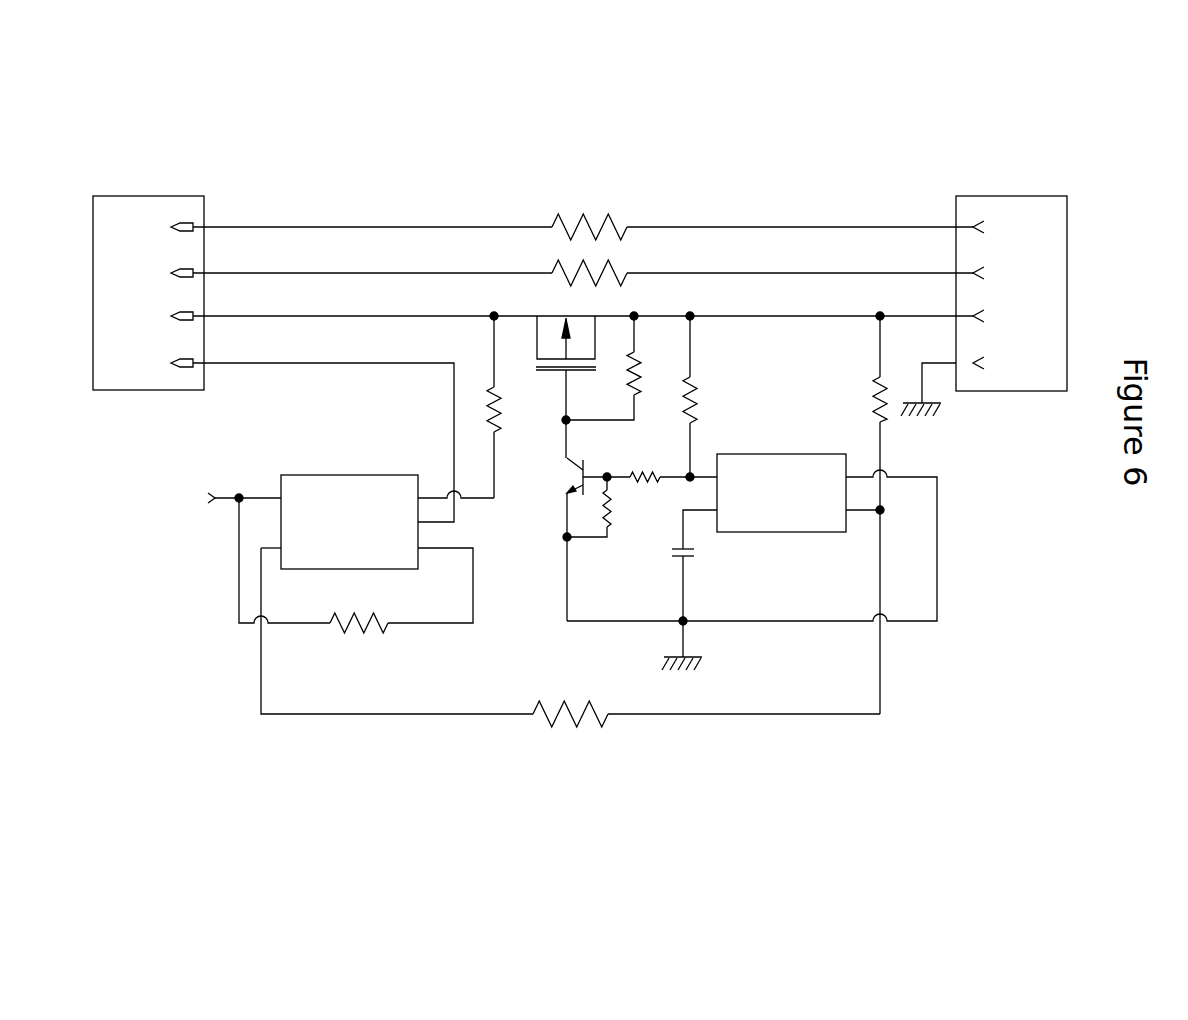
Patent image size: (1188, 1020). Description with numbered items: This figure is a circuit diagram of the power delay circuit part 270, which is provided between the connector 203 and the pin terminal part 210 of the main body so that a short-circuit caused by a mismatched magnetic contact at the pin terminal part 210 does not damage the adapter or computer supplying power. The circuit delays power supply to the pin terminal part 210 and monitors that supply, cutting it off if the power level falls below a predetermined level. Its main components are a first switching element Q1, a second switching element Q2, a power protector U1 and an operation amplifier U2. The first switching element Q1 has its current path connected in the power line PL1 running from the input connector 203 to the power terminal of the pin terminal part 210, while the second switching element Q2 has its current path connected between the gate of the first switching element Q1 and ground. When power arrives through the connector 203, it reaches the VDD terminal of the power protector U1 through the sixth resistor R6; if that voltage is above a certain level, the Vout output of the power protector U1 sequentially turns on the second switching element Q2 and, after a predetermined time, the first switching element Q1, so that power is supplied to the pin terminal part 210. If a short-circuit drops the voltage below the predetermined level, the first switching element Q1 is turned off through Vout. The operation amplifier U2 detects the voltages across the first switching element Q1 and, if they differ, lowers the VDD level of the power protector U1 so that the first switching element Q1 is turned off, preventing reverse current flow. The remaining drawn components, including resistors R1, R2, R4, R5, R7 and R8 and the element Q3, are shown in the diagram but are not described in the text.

The power delay circuit part 270 is at (562, 137).
The pin terminal part 210 is at (148, 196).
The connector 203 is at (1013, 196).
The resistor R1 is at (589, 211).
The resistor R2 is at (589, 260).
The resistor R4 is at (622, 368).
The resistor R5 is at (708, 398).
The sixth resistor R6 is at (859, 515).
The resistor R7 is at (356, 582).
The resistor R8 is at (570, 637).
The first switching element Q1 is at (566, 373).
The second switching element Q2 is at (625, 539).
The resistor/element Q3 is at (513, 407).
The power protector U1 is at (793, 453).
The operation amplifier U2 is at (352, 474).
The power line PL1 is at (738, 316).